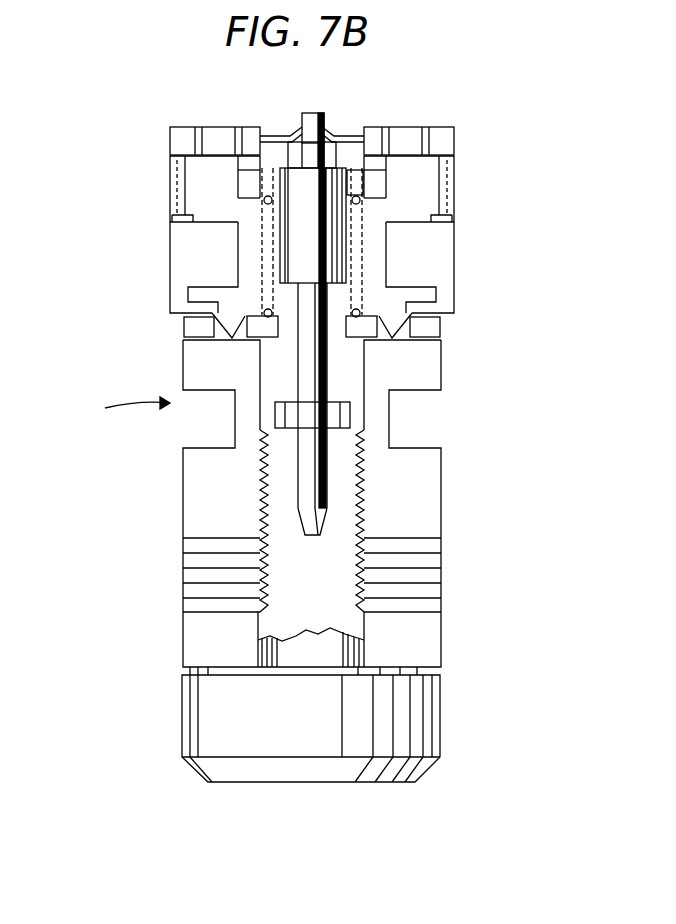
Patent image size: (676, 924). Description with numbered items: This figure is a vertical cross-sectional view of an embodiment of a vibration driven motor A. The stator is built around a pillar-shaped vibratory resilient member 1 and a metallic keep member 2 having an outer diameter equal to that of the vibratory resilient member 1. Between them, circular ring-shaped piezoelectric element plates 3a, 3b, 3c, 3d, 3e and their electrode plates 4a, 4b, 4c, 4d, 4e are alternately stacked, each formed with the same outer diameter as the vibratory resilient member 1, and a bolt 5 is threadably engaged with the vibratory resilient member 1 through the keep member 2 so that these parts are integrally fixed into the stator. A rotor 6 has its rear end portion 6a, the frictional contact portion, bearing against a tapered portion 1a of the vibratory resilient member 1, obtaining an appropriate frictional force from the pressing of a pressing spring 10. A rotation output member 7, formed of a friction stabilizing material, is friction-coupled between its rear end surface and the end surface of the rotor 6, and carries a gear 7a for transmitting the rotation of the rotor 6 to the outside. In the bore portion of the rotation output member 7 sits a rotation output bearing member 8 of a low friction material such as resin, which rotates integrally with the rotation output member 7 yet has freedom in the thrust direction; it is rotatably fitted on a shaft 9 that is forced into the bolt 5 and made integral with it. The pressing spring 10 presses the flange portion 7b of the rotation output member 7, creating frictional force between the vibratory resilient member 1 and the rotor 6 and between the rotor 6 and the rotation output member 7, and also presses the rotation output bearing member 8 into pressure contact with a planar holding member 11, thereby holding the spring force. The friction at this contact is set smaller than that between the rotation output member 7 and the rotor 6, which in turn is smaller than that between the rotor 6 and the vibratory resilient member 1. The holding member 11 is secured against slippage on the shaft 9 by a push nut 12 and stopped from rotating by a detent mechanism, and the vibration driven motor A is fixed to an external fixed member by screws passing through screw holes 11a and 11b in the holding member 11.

The vibratory resilient member 1 is at (415, 375).
The tapered portion 1a is at (402, 340).
The keep member 2 is at (425, 645).
The piezoelectric element plate 3a is at (430, 547).
The piezoelectric element plate 3b is at (430, 562).
The piezoelectric element plate 3c is at (430, 577).
The piezoelectric element plate 3d is at (430, 590).
The piezoelectric element plate 3e is at (428, 605).
The electrode plate 4a is at (188, 540).
The electrode plate 4b is at (188, 555).
The electrode plate 4c is at (188, 570).
The electrode plate 4d is at (188, 585).
The electrode plate 4e is at (188, 600).
The bolt 5 is at (205, 732).
The rotor 6 is at (430, 262).
The rear end portion 6a is at (413, 327).
The rotation output member 7 is at (420, 175).
The gear 7a is at (445, 200).
The flange portion 7b is at (375, 320).
The rotation output bearing member 8 is at (350, 176).
The shaft 9 is at (295, 240).
The pressing spring 10 is at (262, 322).
The holding member 11 is at (440, 140).
The screw hole 11a is at (410, 138).
The screw hole 11b is at (218, 138).
The push nut 12 is at (328, 135).
The vibration driven motor A is at (127, 411).